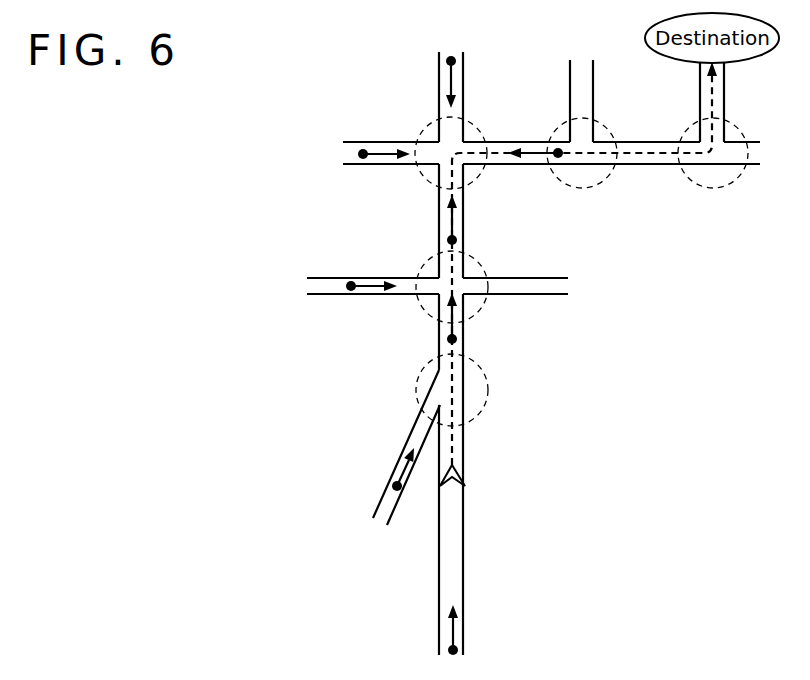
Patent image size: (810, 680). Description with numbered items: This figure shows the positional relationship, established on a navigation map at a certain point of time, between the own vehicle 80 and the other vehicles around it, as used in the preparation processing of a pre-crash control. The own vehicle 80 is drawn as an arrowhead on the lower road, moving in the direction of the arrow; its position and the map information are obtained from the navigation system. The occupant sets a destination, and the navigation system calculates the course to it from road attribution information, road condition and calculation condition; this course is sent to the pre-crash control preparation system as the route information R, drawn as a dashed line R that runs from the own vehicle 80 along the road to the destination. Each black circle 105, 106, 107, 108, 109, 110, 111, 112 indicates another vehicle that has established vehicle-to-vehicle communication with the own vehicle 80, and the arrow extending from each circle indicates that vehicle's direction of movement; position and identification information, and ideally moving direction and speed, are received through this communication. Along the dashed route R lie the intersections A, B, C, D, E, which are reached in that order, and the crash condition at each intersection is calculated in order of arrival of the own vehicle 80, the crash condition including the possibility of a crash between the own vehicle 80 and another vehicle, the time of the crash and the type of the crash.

The another vehicle 105 is at (465, 648).
The another vehicle 106 is at (397, 486).
The another vehicle 107 is at (452, 339).
The another vehicle 108 is at (351, 288).
The another vehicle 109 is at (452, 240).
The another vehicle 110 is at (363, 159).
The another vehicle 111 is at (558, 153).
The another vehicle 112 is at (451, 61).
The own vehicle 80 is at (465, 470).
The intersection A is at (414, 389).
The intersection B is at (474, 318).
The intersection C is at (424, 128).
The intersection D is at (615, 173).
The intersection E is at (718, 192).
The route information R is at (639, 140).